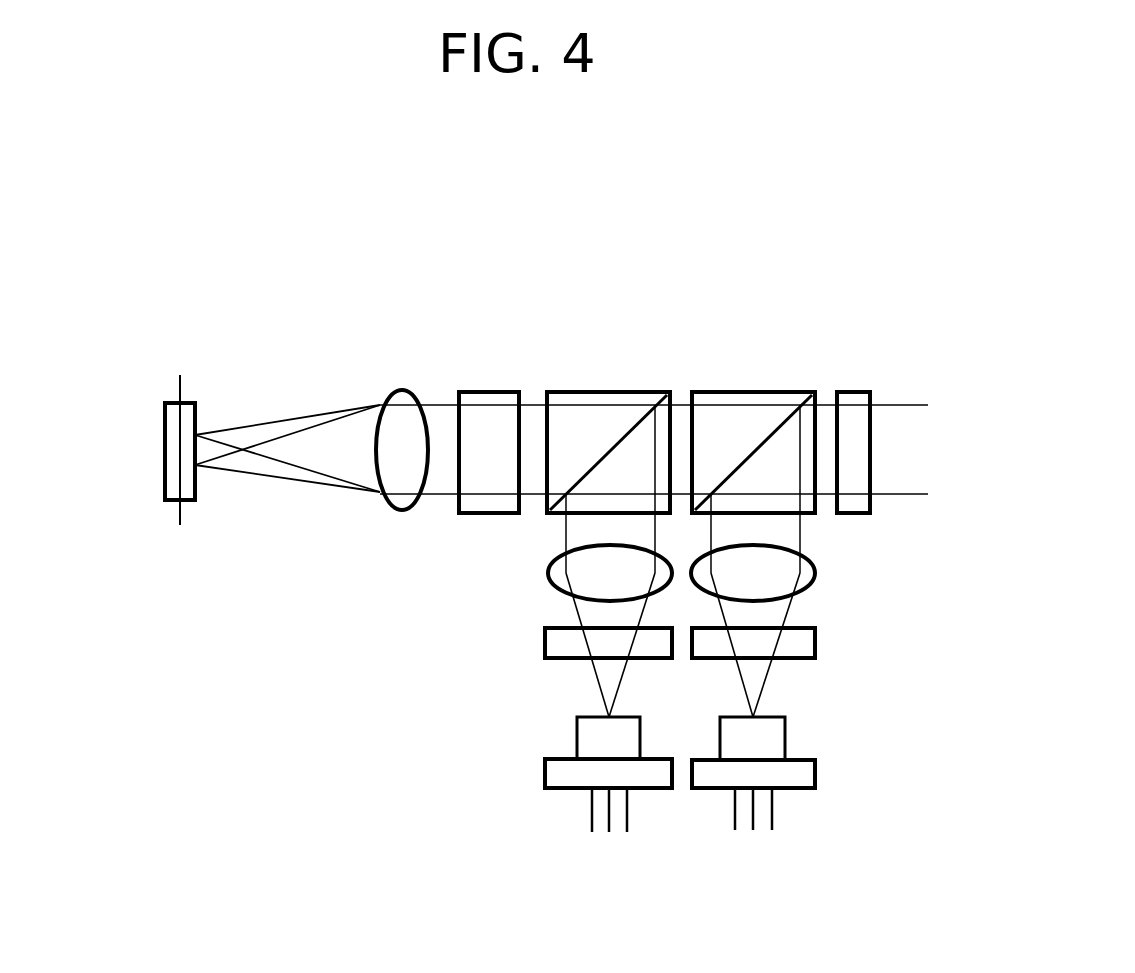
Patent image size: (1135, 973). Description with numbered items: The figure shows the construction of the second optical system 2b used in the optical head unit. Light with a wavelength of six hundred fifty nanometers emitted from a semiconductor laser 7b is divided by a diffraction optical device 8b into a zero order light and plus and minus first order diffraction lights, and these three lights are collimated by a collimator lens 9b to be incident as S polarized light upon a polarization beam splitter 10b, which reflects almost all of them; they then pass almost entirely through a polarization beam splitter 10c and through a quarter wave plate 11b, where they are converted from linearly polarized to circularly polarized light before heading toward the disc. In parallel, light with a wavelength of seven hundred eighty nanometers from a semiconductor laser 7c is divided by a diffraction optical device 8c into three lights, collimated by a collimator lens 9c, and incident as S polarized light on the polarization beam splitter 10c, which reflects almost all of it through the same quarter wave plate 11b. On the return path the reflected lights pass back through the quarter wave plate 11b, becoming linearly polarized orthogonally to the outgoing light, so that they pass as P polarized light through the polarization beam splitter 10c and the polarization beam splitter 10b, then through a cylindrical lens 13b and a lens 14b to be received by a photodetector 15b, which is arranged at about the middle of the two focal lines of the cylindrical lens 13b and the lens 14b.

The second optical system 2b is at (696, 240).
The photodetector 15b is at (178, 452).
The lens 14b is at (400, 404).
The cylindrical lens 13b is at (492, 400).
The polarization beam splitter 10b is at (613, 400).
The polarization beam splitter 10c is at (748, 400).
The ¼ wave plate 11b is at (855, 400).
The collimator lens 9b is at (552, 573).
The collimator lens 9c is at (810, 572).
The diffraction optical device 8b is at (552, 643).
The diffraction optical device 8c is at (810, 642).
The semiconductor laser 7b is at (552, 773).
The semiconductor laser 7c is at (810, 772).